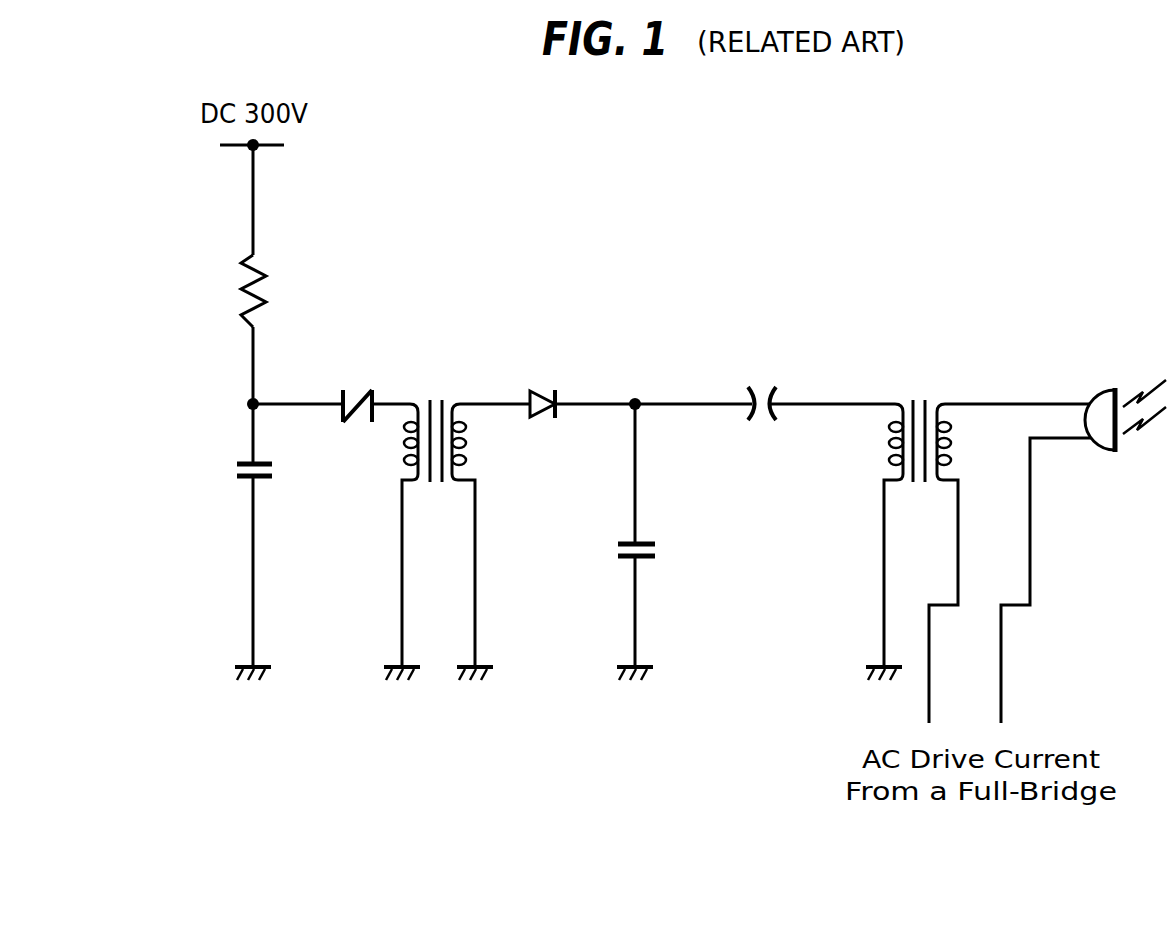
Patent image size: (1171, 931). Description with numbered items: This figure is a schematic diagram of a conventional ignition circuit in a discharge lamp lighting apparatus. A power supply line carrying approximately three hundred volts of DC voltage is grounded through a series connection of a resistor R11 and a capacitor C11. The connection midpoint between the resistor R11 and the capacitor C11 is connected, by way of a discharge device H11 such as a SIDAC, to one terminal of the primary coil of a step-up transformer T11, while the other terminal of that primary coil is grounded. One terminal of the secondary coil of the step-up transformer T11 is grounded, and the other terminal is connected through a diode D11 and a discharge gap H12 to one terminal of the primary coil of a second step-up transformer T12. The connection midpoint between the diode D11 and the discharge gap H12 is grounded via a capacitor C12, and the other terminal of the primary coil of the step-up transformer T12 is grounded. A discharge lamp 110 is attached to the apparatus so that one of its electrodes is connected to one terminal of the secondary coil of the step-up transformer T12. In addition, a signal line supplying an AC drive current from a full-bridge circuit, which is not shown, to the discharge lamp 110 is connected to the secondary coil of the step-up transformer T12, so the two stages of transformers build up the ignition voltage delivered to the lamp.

The resistor R11 is at (281, 291).
The capacitor C11 is at (233, 470).
The discharge device H11 is at (365, 387).
The step-up transformer T11 is at (451, 516).
The diode D11 is at (551, 389).
The capacitor C12 is at (613, 550).
The discharge gap H12 is at (773, 386).
The step-up transformer T12 is at (930, 544).
The discharge lamp 110 is at (1108, 389).